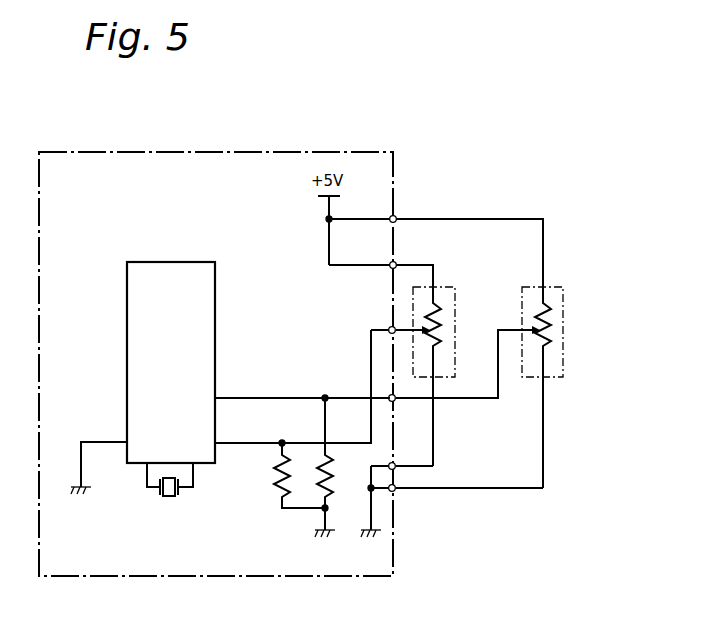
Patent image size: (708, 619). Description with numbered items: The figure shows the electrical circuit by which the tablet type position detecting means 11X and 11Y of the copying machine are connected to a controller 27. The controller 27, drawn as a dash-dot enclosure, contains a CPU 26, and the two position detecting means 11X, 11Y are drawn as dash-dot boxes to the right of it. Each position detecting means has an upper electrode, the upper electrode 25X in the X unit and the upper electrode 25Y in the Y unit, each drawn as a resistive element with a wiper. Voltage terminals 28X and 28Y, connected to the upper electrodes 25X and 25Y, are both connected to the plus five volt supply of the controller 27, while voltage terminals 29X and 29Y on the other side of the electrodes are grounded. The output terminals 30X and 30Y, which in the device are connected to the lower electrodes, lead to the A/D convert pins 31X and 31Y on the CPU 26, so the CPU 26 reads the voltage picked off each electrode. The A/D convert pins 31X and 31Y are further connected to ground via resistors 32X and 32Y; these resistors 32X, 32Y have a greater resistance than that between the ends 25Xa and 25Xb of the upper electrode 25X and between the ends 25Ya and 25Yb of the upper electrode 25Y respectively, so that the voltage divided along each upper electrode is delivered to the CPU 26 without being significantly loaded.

The controller 27 is at (215, 151).
The CPU 26 is at (176, 270).
The voltage terminal 28Y is at (396, 216).
The voltage terminal 28X is at (396, 262).
The tablet type position detecting means 11Y is at (466, 206).
The tablet type position detecting means 11X is at (561, 206).
The upper electrode 25X is at (441, 332).
The end of upper electrode 25Xa is at (432, 312).
The end of upper electrode 25Xb is at (436, 348).
The upper electrode 25Y is at (553, 322).
The end of upper electrode 25Ya is at (548, 305).
The end of upper electrode 25Yb is at (548, 342).
The output terminal 30X is at (389, 327).
The output terminal 30Y is at (389, 395).
The A/D convert pin 31Y is at (220, 396).
The A/D convert pin 31X is at (220, 442).
The resistor 32X is at (276, 473).
The resistor 32Y is at (318, 478).
The voltage terminal 29X is at (396, 466).
The voltage terminal 29Y is at (394, 492).